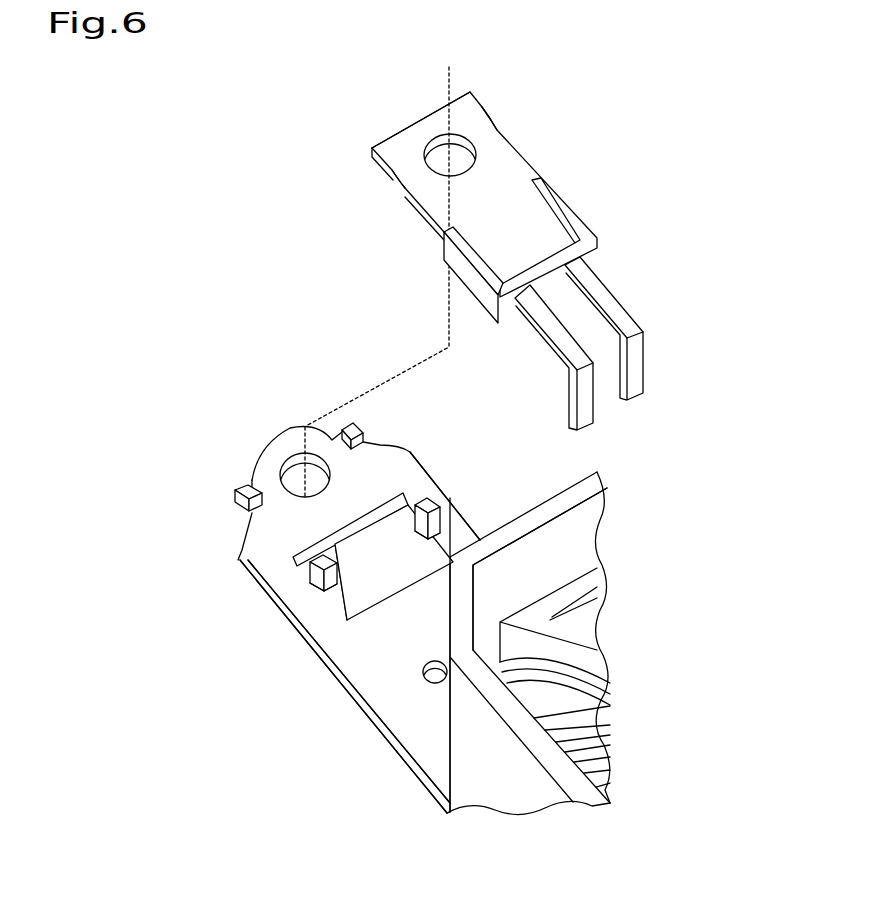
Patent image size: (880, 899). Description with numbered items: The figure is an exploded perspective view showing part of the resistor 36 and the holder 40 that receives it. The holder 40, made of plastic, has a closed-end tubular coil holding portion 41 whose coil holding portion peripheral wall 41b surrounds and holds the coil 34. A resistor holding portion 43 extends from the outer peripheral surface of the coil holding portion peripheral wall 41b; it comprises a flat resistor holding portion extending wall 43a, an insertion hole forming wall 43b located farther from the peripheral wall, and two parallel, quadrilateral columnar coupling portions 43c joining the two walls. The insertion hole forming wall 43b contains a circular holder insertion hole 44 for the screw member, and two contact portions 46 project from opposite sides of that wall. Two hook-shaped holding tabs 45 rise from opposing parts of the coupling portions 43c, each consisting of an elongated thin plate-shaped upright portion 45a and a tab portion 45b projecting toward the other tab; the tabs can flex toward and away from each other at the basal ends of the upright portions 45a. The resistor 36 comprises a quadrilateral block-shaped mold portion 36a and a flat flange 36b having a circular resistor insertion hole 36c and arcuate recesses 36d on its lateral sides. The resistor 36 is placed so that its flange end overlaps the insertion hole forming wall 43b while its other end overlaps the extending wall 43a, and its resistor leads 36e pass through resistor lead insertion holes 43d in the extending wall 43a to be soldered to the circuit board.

The coil 34 is at (592, 623).
The resistor 36 is at (488, 269).
The mold portion 36a is at (478, 303).
The flange 36b is at (466, 91).
The resistor insertion hole 36c is at (432, 143).
The recesses 36d is at (493, 120).
The resistor lead 36e is at (632, 403).
The holder 40 is at (160, 443).
The coil holding portion 41 is at (560, 638).
The coil holding portion peripheral wall 41b is at (590, 528).
The resistor holding portion 43 is at (353, 602).
The resistor holding portion extending wall 43a is at (420, 745).
The insertion hole forming wall 43b is at (410, 450).
The coupling portions 43c is at (290, 590).
The resistor lead insertion holes 43d is at (430, 661).
The holder insertion hole 44 is at (281, 468).
The holding tabs 45 is at (316, 566).
The upright portion 45a is at (318, 583).
The tab portion 45b is at (362, 520).
The contact portions 46 is at (353, 430).